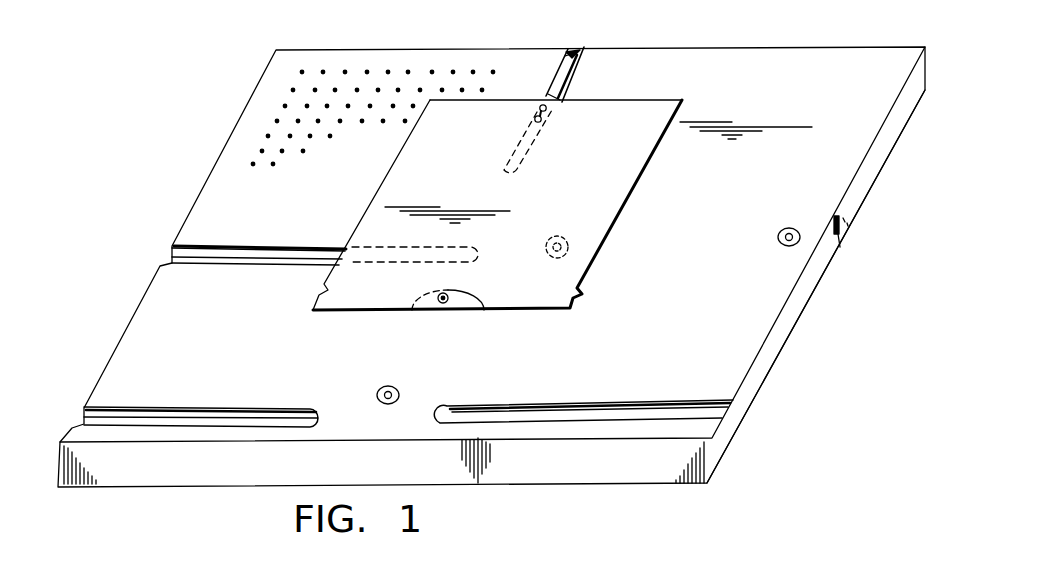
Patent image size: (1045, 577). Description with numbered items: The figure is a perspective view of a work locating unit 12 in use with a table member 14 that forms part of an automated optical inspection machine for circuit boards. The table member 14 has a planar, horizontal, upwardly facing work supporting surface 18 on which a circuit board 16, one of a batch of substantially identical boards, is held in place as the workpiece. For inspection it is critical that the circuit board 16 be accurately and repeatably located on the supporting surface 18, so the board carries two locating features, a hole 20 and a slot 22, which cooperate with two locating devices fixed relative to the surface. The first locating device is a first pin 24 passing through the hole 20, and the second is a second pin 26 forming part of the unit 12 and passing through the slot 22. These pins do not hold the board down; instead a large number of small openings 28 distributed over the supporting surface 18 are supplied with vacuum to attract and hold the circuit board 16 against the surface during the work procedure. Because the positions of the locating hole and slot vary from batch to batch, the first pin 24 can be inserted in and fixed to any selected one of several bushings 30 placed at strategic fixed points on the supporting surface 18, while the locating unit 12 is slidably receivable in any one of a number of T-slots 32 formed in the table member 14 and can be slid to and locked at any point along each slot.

The work locating unit 12 is at (558, 92).
The table member 14 is at (838, 56).
The circuit board 16 is at (612, 208).
The work supporting surface 18 is at (845, 168).
The hole 20 is at (483, 300).
The slot 22 is at (552, 115).
The first pin 24 is at (430, 302).
The second pin 26 is at (605, 100).
The small openings 28 is at (302, 72).
The bushings 30 is at (793, 229).
The T-slots 32 is at (568, 57).